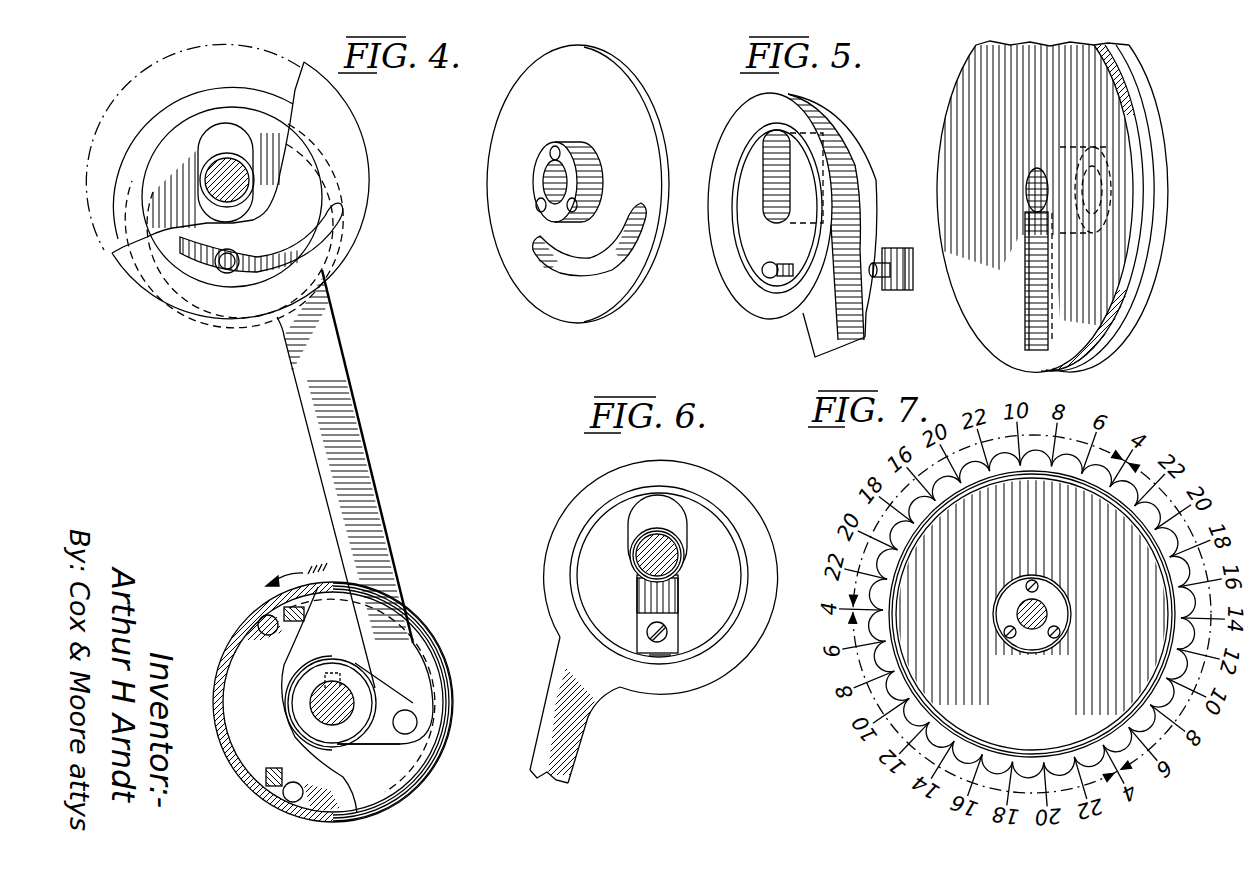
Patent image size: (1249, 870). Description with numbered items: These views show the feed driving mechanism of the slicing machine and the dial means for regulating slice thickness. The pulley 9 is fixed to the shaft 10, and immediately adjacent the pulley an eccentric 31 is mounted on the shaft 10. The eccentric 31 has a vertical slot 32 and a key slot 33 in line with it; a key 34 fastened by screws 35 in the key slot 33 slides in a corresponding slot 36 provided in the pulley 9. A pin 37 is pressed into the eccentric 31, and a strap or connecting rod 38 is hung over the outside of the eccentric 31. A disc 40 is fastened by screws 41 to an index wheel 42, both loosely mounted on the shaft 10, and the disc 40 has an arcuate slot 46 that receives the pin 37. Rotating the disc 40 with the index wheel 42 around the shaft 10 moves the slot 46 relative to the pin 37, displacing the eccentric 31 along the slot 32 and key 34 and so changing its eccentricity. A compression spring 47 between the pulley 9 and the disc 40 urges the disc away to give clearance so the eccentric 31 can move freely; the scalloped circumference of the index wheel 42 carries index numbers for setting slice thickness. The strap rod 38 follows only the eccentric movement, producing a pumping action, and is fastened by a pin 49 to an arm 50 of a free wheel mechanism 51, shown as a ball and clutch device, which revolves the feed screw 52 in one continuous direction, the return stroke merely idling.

In FIG. 5, the pulley 9 is at (1153, 157).
In FIG. 4, the shaft 10 is at (230, 168).
In FIG. 6, the shaft 10 is at (643, 562).
In FIG. 7, the shaft 10 is at (1047, 616).
In FIG. 4, the eccentric 31 is at (170, 160).
In FIG. 5, the eccentric 31 is at (748, 258).
In FIG. 6, the eccentric 31 is at (713, 540).
In FIG. 4, the vertical slot 32 is at (208, 130).
In FIG. 5, the vertical slot 32 is at (762, 185).
In FIG. 6, the vertical slot 32 is at (682, 507).
In FIG. 6, the key slot 33 is at (682, 603).
In FIG. 5, the key 34 is at (910, 290).
In FIG. 6, the key 34 is at (670, 645).
In FIG. 5, the screws 35 is at (880, 263).
In FIG. 6, the screws 35 is at (657, 644).
In FIG. 5, the slot 36 is at (1023, 320).
In FIG. 4, the pin 37 is at (226, 266).
In FIG. 5, the pin 37 is at (767, 278).
In FIG. 4, the eccentric strap rod 38 is at (327, 310).
In FIG. 5, the eccentric strap rod 38 is at (867, 190).
In FIG. 6, the eccentric strap rod 38 is at (733, 505).
In FIG. 4, the disc 40 is at (357, 182).
In FIG. 5, the disc 40 is at (517, 272).
In FIG. 7, the screws 41 is at (1050, 638).
In FIG. 7, the index wheel 42 is at (967, 724).
In FIG. 4, the arcuate slot 46 is at (343, 211).
In FIG. 5, the arcuate slot 46 is at (563, 272).
In FIG. 4, the compression spring 47 is at (240, 203).
In FIG. 6, the compression spring 47 is at (677, 573).
In FIG. 4, the pin 49 is at (418, 730).
In FIG. 4, the arm 50 is at (376, 742).
In FIG. 4, the free wheel mechanism 51 is at (443, 640).
In FIG. 4, the feed screw 52 is at (325, 713).